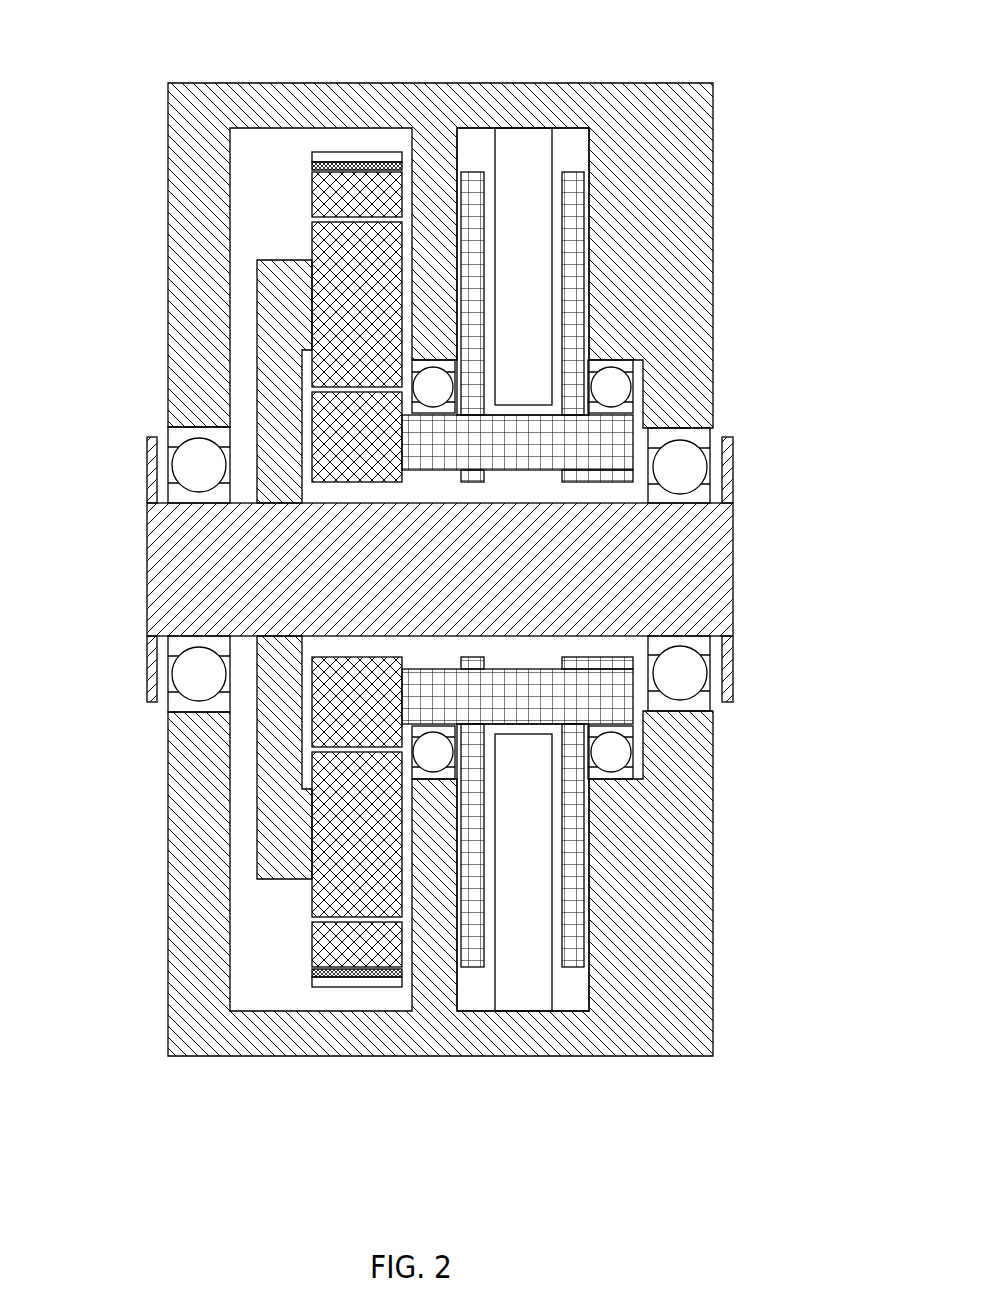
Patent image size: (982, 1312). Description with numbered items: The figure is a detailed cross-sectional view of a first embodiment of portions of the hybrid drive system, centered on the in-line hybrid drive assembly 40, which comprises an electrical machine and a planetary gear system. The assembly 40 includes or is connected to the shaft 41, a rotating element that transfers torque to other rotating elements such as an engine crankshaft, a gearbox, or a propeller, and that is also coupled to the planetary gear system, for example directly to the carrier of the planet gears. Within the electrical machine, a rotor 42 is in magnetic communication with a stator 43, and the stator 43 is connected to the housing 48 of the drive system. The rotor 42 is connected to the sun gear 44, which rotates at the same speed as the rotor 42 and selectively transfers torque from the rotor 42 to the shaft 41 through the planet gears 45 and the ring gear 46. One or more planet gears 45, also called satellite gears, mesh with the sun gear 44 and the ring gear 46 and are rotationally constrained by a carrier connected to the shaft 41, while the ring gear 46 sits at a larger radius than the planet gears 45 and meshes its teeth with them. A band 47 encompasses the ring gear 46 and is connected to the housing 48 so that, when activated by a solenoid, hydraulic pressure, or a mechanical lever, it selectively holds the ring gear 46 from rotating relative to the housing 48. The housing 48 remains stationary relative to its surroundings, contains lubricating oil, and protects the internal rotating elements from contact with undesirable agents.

The in-line hybrid drive assembly 40 is at (93, 28).
The shaft 41 is at (135, 570).
The rotor 42 is at (595, 674).
The stator 43 is at (528, 390).
The sun gear 44 is at (300, 423).
The planet gears 45 is at (307, 248).
The ring gear 46 is at (307, 188).
The band 47 is at (352, 150).
The housing 48 is at (675, 233).